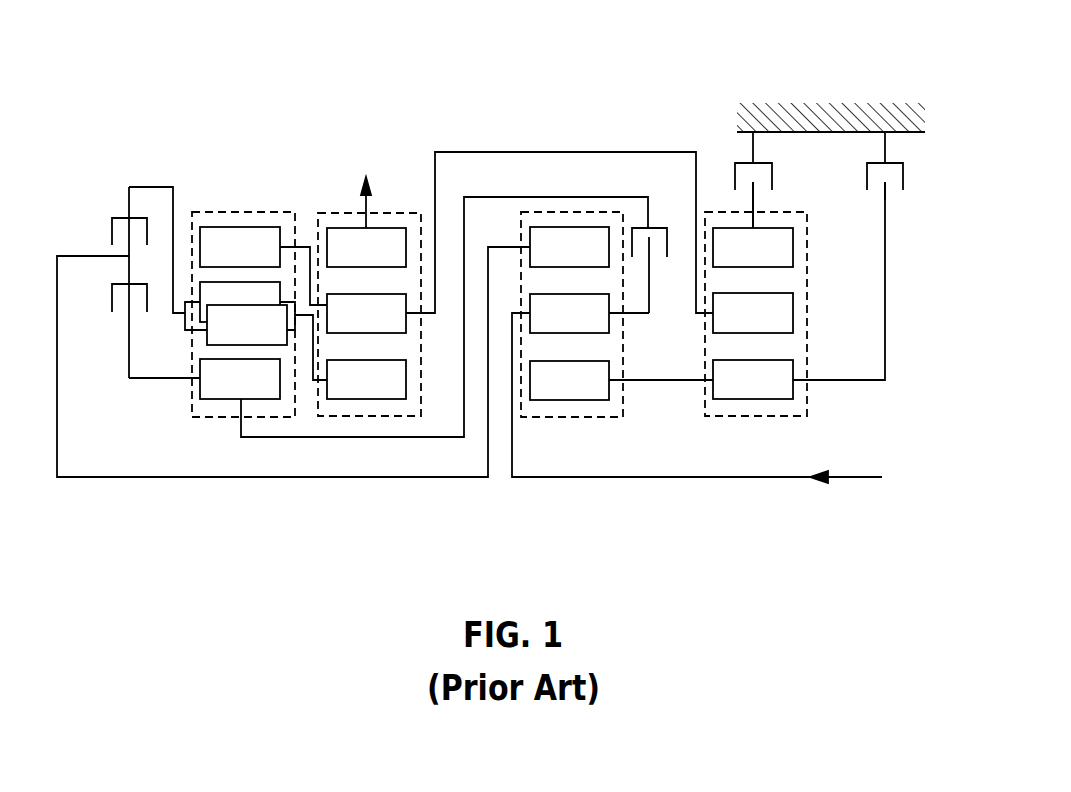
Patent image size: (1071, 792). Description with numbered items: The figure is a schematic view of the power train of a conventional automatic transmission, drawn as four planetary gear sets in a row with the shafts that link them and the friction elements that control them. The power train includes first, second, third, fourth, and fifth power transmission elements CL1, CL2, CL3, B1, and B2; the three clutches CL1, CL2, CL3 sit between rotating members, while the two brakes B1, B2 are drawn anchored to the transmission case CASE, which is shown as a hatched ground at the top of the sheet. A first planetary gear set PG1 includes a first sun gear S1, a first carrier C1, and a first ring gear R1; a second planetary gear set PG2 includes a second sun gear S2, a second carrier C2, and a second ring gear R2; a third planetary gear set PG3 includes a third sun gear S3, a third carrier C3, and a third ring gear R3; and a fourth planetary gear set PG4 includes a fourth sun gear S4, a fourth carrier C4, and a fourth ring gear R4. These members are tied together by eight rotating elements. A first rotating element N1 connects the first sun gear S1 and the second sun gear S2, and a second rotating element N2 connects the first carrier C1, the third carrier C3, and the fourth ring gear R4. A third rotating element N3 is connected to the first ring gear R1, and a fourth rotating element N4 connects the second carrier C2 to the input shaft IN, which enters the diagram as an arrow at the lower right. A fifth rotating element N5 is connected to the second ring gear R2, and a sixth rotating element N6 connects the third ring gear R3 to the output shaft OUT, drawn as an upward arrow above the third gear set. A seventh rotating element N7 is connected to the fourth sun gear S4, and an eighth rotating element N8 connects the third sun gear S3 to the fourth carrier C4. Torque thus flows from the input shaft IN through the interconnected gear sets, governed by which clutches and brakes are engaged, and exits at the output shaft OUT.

The transmission case CASE is at (840, 108).
The fourth power transmission element B1 is at (902, 166).
The fifth power transmission element B2 is at (770, 180).
The first power transmission element CL1 is at (105, 235).
The second power transmission element CL2 is at (131, 330).
The third power transmission element CL3 is at (662, 256).
The first planetary gear set PG1 is at (766, 417).
The second planetary gear set PG2 is at (573, 418).
The third planetary gear set PG3 is at (403, 418).
The fourth planetary gear set PG4 is at (223, 418).
The first ring gear R1 is at (753, 247).
The first carrier C1 is at (753, 313).
The first sun gear S1 is at (753, 379).
The second ring gear R2 is at (569, 247).
The second carrier C2 is at (569, 313).
The second sun gear S2 is at (569, 380).
The third ring gear R3 is at (366, 247).
The third carrier C3 is at (366, 313).
The third sun gear S3 is at (366, 379).
The fourth ring gear R4 is at (240, 247).
The fourth carrier C4 is at (240, 313).
The fourth sun gear S4 is at (240, 379).
The first rotating element N1 is at (867, 380).
The second rotating element N2 is at (696, 299).
The third rotating element N3 is at (754, 195).
The fourth rotating element N4 is at (730, 477).
The fifth rotating element N5 is at (385, 478).
The sixth rotating element N6 is at (365, 202).
The seventh rotating element N7 is at (320, 438).
The eighth rotating element N8 is at (172, 302).
The input shaft IN is at (836, 464).
The output shaft OUT is at (363, 171).